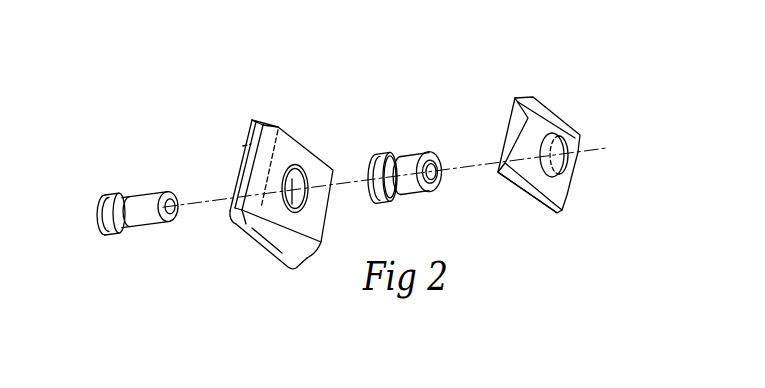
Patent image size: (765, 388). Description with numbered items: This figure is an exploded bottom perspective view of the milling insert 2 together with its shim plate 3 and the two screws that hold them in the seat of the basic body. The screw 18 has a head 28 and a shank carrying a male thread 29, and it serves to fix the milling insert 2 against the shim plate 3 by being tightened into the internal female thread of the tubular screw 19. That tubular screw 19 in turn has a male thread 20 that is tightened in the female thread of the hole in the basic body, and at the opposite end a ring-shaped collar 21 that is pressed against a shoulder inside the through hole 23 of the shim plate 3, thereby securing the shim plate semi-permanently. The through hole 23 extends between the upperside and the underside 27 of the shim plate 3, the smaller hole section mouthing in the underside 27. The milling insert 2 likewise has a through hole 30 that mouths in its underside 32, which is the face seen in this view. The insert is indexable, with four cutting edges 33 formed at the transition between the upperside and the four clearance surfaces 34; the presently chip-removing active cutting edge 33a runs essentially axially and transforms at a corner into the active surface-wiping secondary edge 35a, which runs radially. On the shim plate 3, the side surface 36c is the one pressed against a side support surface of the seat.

The milling insert 2 is at (257, 102).
The shim plate 3 is at (545, 80).
The screw 18 is at (133, 176).
The tubular screw 19 is at (410, 130).
The male thread 20 is at (413, 190).
The ring-shaped collar 21 is at (382, 200).
The through hole 23 is at (562, 166).
The underside 27 is at (568, 145).
The head 28 is at (100, 227).
The male thread 29 is at (146, 220).
The through hole 30 is at (307, 185).
The underside 32 is at (289, 156).
The cutting edges 33 is at (268, 258).
The active cutting edge 33a is at (236, 178).
The clearance surfaces 34 is at (262, 143).
The active secondary edge 35a is at (232, 224).
The side surface 36c is at (535, 199).